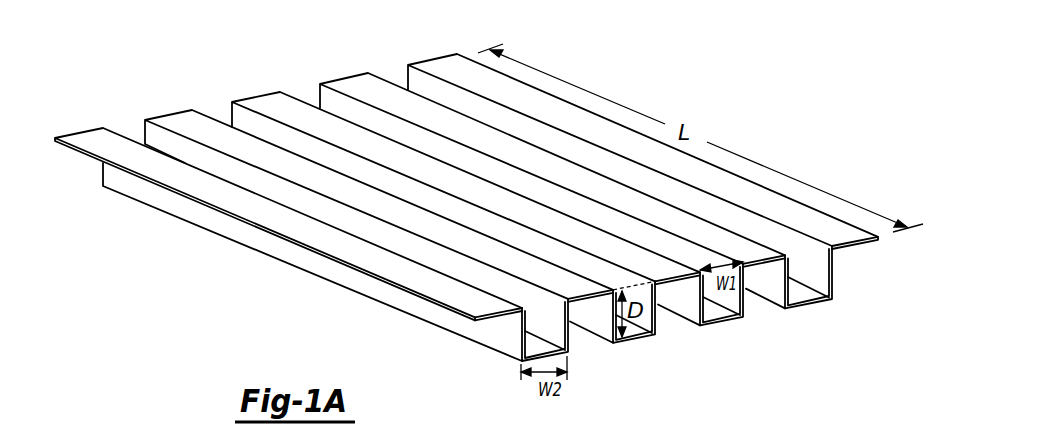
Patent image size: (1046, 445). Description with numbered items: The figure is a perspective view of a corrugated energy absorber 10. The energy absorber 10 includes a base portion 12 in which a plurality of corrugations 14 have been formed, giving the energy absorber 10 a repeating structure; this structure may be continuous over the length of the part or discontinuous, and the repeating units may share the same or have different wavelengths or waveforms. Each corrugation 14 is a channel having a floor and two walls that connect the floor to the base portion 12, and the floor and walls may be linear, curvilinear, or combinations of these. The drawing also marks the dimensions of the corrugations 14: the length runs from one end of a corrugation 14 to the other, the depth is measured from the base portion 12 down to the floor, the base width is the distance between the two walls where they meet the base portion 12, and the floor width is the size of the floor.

The energy absorber 10 is at (180, 291).
The base portion 12 is at (438, 65).
The corrugation 14 is at (813, 310).